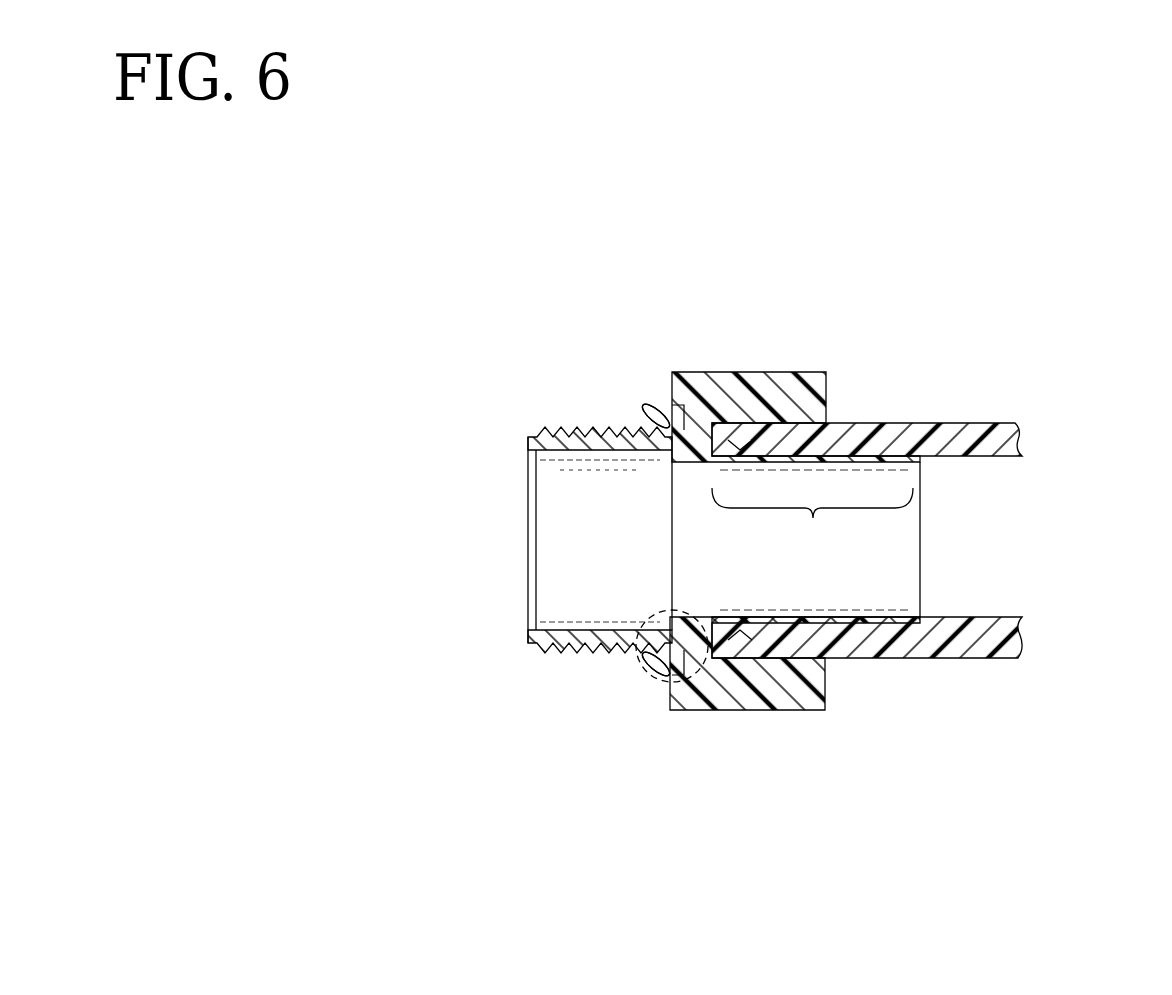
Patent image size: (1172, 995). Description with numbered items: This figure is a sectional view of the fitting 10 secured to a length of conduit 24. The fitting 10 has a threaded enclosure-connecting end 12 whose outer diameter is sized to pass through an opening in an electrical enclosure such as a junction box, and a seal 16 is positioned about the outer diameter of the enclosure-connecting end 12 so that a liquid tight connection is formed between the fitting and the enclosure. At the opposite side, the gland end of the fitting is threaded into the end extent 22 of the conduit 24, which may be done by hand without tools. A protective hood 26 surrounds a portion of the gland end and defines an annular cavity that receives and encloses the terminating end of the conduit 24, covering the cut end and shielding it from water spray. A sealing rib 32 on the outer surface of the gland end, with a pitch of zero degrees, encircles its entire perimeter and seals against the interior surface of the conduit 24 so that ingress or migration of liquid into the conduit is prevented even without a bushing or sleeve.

The fitting 10 is at (557, 795).
The threaded enclosure-connecting end 12 is at (518, 426).
The seal 16 is at (530, 308).
The end extent 22 is at (812, 519).
The conduit 24 is at (1000, 422).
The protective hood 26 is at (795, 711).
The sealing rib 32 is at (736, 440).